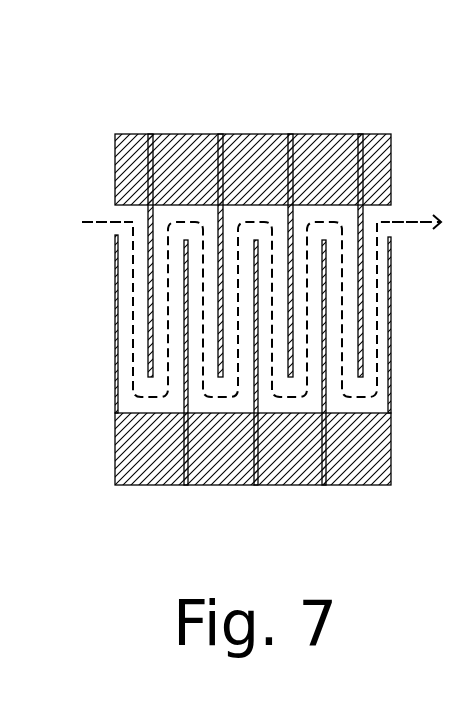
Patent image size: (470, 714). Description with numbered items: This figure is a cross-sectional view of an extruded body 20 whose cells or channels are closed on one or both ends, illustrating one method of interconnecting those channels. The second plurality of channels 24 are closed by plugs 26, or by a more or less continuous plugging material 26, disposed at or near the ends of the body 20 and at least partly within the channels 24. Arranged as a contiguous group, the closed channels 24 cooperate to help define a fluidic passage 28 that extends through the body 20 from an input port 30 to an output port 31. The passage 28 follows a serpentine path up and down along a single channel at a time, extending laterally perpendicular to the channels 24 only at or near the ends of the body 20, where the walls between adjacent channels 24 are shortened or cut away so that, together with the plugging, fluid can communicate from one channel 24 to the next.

The extruded body 20 is at (115, 333).
The second plurality of channels 24 is at (235, 100).
The plugs 26 is at (325, 138).
The fluidic passage 28 is at (107, 226).
The input port 30 is at (100, 213).
The output port 31 is at (402, 211).